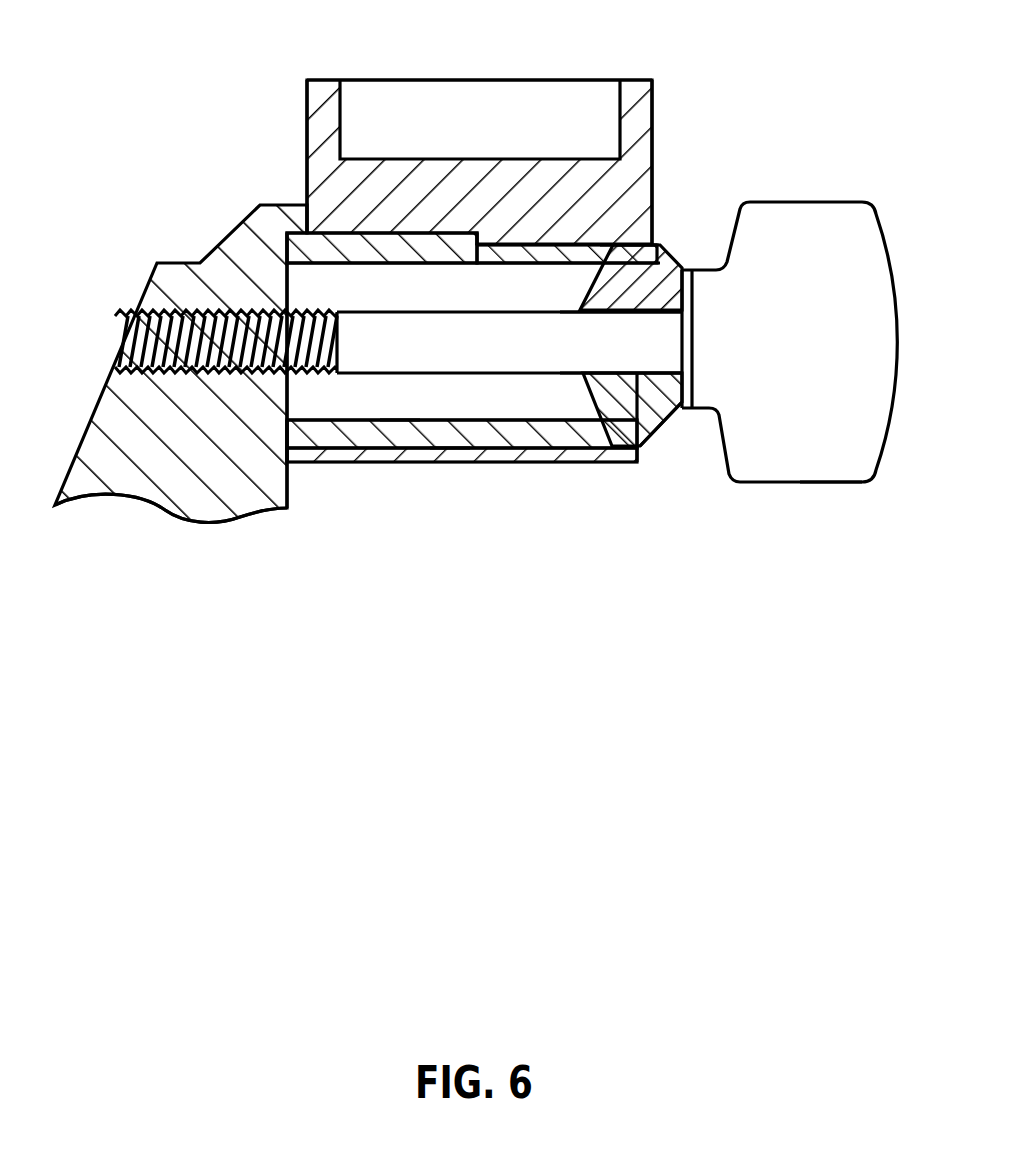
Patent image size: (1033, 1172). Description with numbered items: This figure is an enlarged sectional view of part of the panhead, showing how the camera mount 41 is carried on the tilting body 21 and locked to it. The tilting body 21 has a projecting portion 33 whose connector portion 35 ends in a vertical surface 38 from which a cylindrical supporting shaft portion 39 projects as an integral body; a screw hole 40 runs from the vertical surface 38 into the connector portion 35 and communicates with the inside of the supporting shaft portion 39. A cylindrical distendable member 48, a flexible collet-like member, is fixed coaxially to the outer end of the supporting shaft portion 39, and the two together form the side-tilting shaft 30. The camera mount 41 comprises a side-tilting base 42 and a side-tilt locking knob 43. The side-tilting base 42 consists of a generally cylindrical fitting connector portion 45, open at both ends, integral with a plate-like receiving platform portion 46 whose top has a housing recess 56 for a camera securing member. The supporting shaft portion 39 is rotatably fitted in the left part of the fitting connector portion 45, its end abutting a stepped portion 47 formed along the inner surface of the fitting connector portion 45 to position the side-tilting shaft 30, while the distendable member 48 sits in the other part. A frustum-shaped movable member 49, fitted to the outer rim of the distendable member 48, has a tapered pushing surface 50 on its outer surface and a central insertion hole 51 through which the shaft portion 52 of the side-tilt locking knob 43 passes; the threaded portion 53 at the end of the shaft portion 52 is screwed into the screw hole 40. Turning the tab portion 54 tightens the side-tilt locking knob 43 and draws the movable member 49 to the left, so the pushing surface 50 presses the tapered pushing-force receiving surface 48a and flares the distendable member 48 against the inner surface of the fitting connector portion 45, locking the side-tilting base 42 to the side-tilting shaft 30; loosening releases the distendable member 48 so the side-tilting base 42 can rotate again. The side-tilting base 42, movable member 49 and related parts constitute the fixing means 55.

The tilting body 21 is at (180, 256).
The projecting portion 33 is at (143, 413).
The connector portion 35 is at (118, 475).
The screw hole 40 is at (150, 337).
The threaded portion 53 is at (216, 360).
The side-tilting shaft 30 is at (364, 437).
The vertical surface 38 is at (285, 487).
The supporting shaft portion 39 is at (395, 437).
The stepped portion 47 is at (448, 447).
The fitting connector portion 45 is at (497, 448).
The pushing surface 50 is at (605, 290).
The distendable member 48 is at (533, 430).
The pushing-force receiving surface 48a is at (637, 212).
The shaft portion 52 is at (660, 262).
The insertion hole 51 is at (648, 425).
The movable member 49 is at (670, 413).
The fixing means 55 is at (726, 497).
The side-tilt locking knob 43 is at (796, 202).
The tab portion 54 is at (836, 463).
The camera mount 41 is at (664, 68).
The receiving platform portion 46 is at (307, 115).
The side-tilting base 42 is at (647, 118).
The housing recess 56 is at (340, 108).